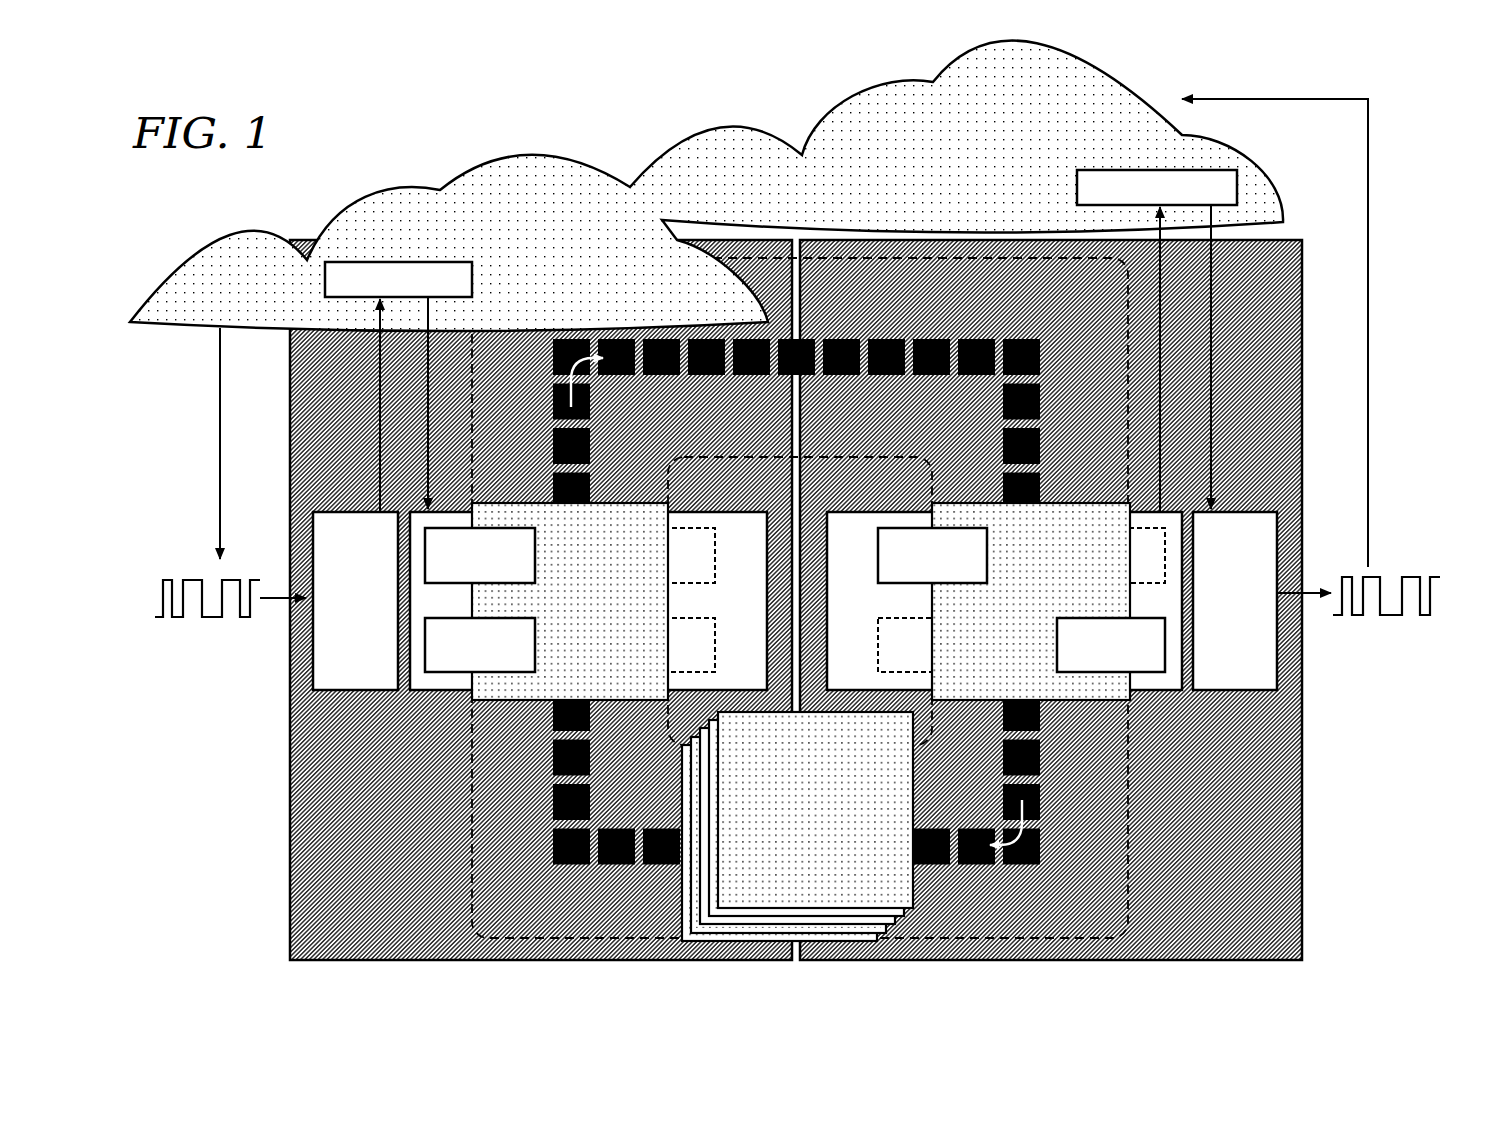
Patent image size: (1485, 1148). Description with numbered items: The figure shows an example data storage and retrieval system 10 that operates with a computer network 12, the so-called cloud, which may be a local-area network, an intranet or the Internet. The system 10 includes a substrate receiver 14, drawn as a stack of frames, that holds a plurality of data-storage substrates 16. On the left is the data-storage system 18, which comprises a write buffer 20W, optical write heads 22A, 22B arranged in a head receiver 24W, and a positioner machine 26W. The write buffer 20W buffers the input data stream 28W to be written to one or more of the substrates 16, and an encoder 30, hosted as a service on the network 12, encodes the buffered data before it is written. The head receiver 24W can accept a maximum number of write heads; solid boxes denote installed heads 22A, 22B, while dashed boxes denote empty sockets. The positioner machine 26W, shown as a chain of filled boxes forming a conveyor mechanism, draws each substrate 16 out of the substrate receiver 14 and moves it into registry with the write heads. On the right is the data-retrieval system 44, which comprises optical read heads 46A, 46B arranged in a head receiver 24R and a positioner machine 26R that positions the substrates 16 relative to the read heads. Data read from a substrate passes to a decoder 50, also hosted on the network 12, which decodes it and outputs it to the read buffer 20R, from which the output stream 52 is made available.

The data storage and retrieval (DSR) system 10 is at (205, 879).
The computer network 12 is at (706, 186).
The substrate receiver 14 is at (932, 906).
The data-storage substrate 16 is at (801, 701).
The data-storage (DS) system 18 is at (541, 600).
The write buffer 20W is at (355, 601).
The read buffer 20R is at (1235, 601).
The optical write head 22A is at (480, 555).
The optical write head 22B is at (480, 645).
The head receiver 24W is at (588, 601).
The head receiver 24R is at (1004, 601).
The positioner machine 26W is at (569, 864).
The positioner machine 26R is at (1021, 339).
The input data stream 28W is at (225, 613).
The encoder 30 is at (398, 279).
The data-retrieval (DR) system 44 is at (1051, 600).
The optical read head 46A is at (932, 555).
The optical read head 46B is at (1111, 645).
The decoder 50 is at (1157, 187).
The output stream 52 is at (1311, 375).